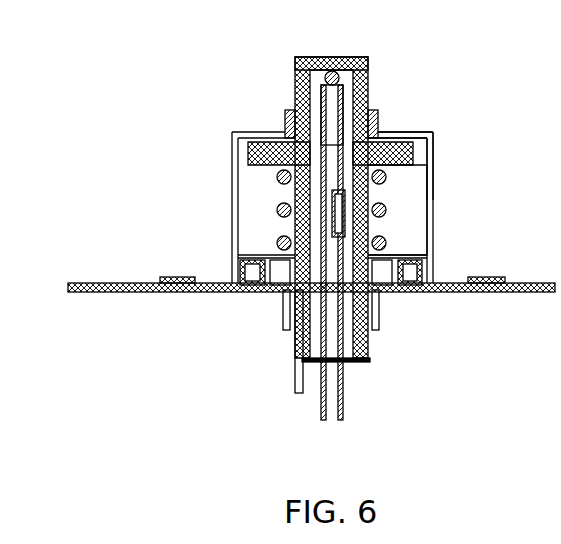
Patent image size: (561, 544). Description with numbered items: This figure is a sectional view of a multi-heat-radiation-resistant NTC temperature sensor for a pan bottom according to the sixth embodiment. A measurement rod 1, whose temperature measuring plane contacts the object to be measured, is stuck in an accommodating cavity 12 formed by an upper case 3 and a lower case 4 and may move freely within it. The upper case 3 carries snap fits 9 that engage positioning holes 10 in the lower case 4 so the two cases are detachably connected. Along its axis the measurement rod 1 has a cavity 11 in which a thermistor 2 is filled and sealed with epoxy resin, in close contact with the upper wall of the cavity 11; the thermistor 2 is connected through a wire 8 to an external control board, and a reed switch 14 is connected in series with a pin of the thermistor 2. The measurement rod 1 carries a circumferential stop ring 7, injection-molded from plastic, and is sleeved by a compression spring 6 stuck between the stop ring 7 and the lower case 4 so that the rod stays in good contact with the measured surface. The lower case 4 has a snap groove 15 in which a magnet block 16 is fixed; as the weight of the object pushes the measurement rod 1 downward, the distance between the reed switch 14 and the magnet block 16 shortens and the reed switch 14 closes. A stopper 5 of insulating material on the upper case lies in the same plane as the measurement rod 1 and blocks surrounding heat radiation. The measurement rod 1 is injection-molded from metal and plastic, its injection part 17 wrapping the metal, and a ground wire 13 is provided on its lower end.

The measurement rod 1 is at (353, 55).
The thermistor 2 is at (295, 63).
The upper case 3 is at (434, 205).
The lower case 4 is at (283, 295).
The stopper 5 is at (287, 120).
The compression spring 6 is at (280, 237).
The stop ring 7 is at (422, 138).
The wire 8 is at (320, 397).
The snap fits 9 is at (163, 278).
The positioning holes 10 is at (113, 293).
The cavity 11 is at (345, 118).
The accommodating cavity 12 is at (407, 233).
The ground wire 13 is at (297, 375).
The reed switch 14 is at (312, 186).
The snap groove 15 is at (434, 255).
The magnet block 16 is at (410, 280).
The injection part 17 is at (375, 325).